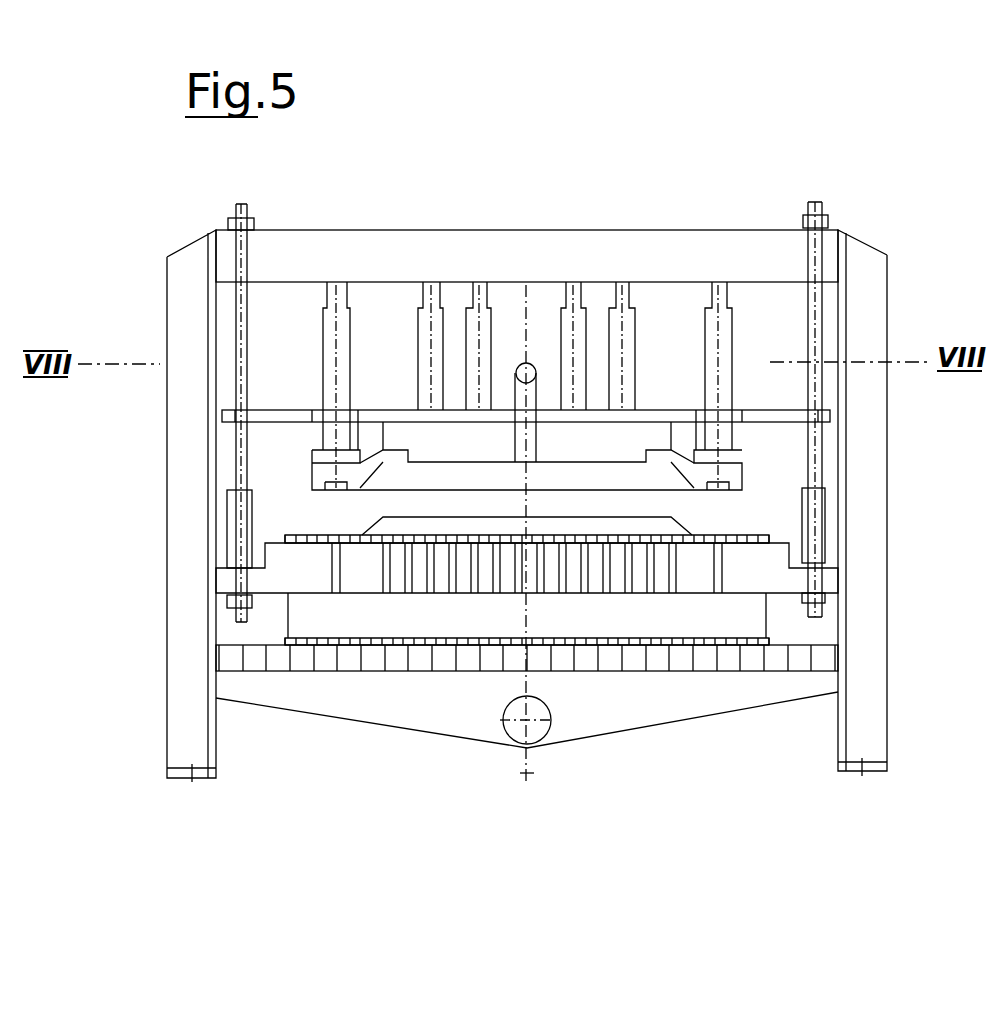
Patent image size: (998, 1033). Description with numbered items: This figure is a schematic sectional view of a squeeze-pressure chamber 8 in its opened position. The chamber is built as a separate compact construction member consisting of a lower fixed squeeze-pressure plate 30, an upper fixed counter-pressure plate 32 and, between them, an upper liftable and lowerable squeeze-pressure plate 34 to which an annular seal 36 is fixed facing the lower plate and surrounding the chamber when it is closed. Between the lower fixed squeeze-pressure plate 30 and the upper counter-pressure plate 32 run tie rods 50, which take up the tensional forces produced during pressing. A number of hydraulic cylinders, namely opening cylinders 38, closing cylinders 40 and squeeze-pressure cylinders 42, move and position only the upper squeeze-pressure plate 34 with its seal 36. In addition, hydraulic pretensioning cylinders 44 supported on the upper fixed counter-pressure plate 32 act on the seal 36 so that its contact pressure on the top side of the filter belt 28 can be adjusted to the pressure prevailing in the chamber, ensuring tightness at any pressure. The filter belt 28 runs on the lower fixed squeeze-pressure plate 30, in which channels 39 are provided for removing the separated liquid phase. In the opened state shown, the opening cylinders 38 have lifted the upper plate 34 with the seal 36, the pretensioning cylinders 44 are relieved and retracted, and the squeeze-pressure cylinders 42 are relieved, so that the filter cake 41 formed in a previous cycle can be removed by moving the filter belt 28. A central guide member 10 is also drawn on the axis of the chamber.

The squeeze-pressure chamber 8 is at (870, 238).
The central guide spindle 10 is at (523, 363).
The filter belt 28 is at (750, 530).
The lower fixed squeeze-pressure plate 30 is at (758, 568).
The upper fixed counter-pressure plate 32 is at (729, 258).
The upper liftable and lowerable squeeze-pressure plate 34 is at (649, 427).
The seal 36 is at (732, 472).
The opening cylinders 38 is at (233, 513).
The channels 39 is at (333, 568).
The closing cylinders 40 is at (616, 323).
The filter cake 41 is at (427, 525).
The squeeze-pressure cylinders 42 is at (472, 323).
The hydraulic pretensioning cylinders 44 is at (327, 337).
The tie rods 50 is at (815, 207).